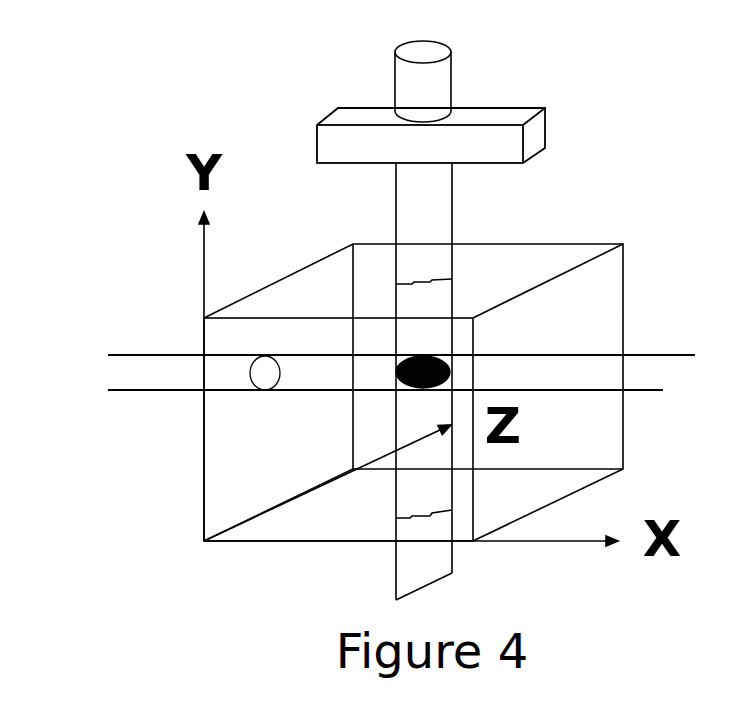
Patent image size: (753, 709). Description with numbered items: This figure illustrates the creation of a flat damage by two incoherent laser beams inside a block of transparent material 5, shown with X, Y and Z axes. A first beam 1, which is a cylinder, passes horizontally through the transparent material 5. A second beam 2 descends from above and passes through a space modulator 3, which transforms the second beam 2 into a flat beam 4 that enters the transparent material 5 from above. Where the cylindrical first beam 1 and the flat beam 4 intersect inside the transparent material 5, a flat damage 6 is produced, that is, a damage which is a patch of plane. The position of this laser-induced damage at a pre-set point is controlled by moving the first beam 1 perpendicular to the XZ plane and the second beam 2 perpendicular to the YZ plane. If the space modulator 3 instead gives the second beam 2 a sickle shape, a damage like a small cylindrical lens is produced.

The first beam 1 is at (157, 401).
The second beam 2 is at (453, 100).
The space modulator 3 is at (478, 121).
The flat beam 4 is at (459, 381).
The transparent material 5 is at (462, 390).
The flat damage 6 is at (236, 449).